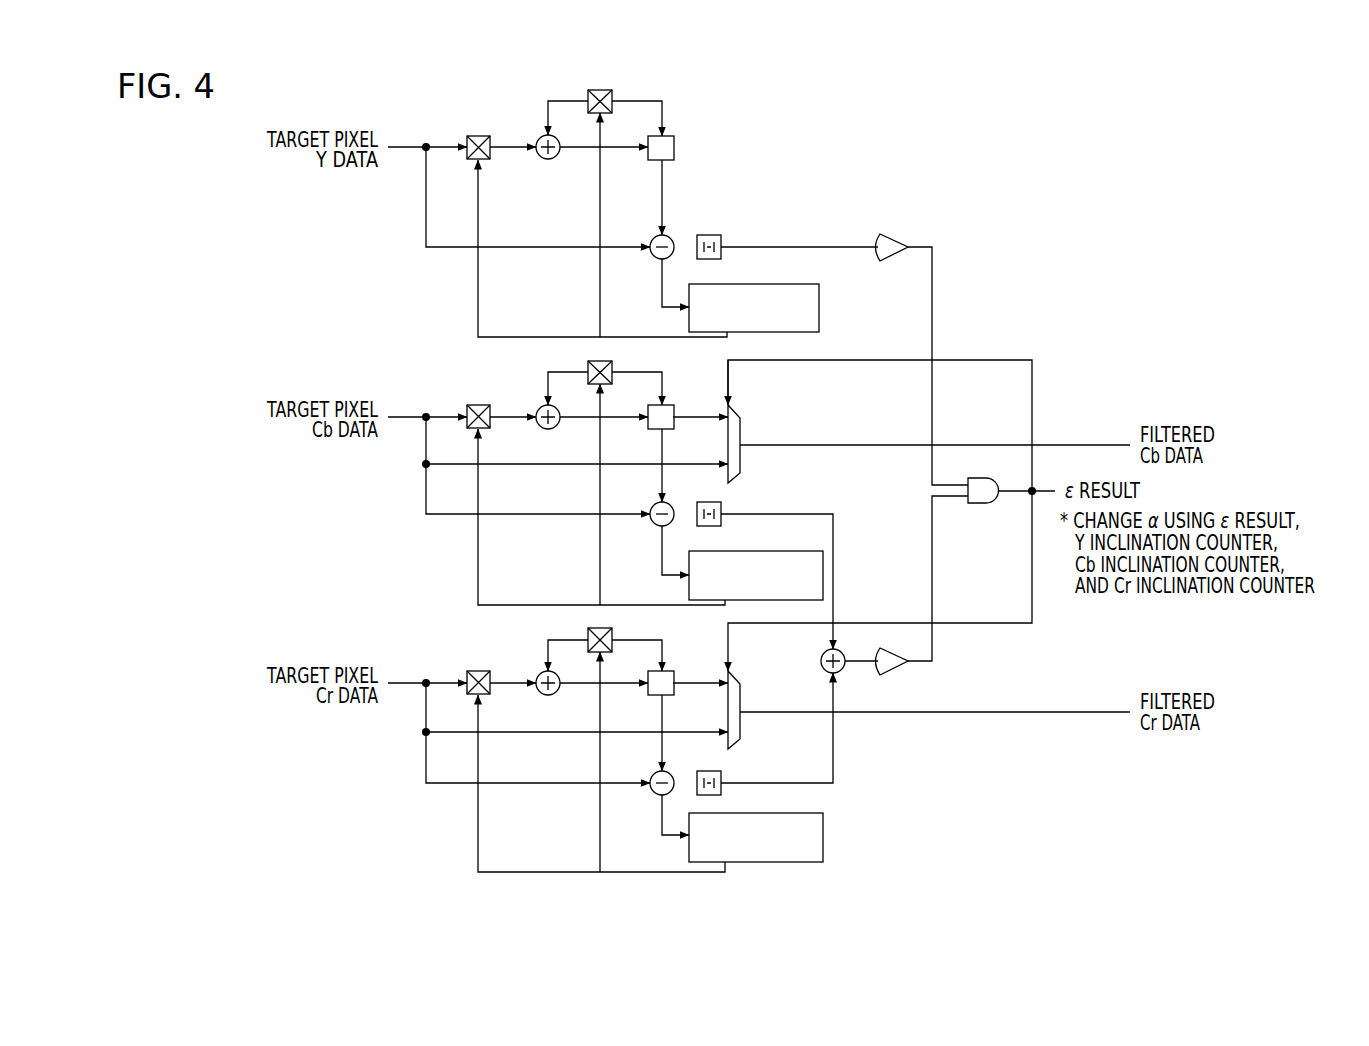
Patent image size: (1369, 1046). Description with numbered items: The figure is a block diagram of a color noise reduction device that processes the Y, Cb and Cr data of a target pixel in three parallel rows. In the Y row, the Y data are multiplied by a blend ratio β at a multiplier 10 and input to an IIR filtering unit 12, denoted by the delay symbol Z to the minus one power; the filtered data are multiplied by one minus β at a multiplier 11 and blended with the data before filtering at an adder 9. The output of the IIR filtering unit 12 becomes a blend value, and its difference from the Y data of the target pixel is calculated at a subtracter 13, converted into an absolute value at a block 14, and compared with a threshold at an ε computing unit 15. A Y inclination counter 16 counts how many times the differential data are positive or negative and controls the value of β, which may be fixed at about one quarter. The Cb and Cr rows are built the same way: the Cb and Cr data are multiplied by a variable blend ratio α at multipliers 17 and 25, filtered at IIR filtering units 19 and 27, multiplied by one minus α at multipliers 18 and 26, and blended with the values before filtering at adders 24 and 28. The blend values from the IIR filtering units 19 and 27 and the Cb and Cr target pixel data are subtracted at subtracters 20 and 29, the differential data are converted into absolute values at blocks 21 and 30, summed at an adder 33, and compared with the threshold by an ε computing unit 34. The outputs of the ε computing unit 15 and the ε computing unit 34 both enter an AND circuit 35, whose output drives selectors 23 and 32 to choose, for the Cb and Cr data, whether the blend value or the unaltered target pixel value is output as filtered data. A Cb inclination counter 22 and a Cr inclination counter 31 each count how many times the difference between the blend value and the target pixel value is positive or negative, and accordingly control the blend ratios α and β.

The adder 9 is at (556, 156).
The multiplier 10 is at (506, 126).
The multiplier 11 is at (630, 78).
The IIR filtering unit 12 is at (674, 140).
The subtracter 13 is at (670, 239).
The absolute value block 14 is at (721, 237).
The ε computing unit 15 is at (900, 243).
The Y inclination counter 16 is at (819, 313).
The multiplier 17 is at (506, 396).
The multiplier 18 is at (630, 353).
The IIR filtering unit 19 is at (674, 406).
The subtracter 20 is at (670, 506).
The absolute value block 21 is at (721, 504).
The Cb inclination counter 22 is at (765, 551).
The selector 23 is at (740, 433).
The adder 24 is at (556, 426).
The multiplier 25 is at (506, 662).
The multiplier 26 is at (630, 622).
The IIR filtering unit 27 is at (674, 672).
The adder 28 is at (556, 692).
The subtracter 29 is at (670, 775).
The absolute value block 30 is at (721, 773).
The Cr inclination counter 31 is at (765, 813).
The selector 32 is at (740, 699).
The adder 33 is at (841, 654).
The ε computing unit 34 is at (902, 668).
The AND circuit 35 is at (980, 504).